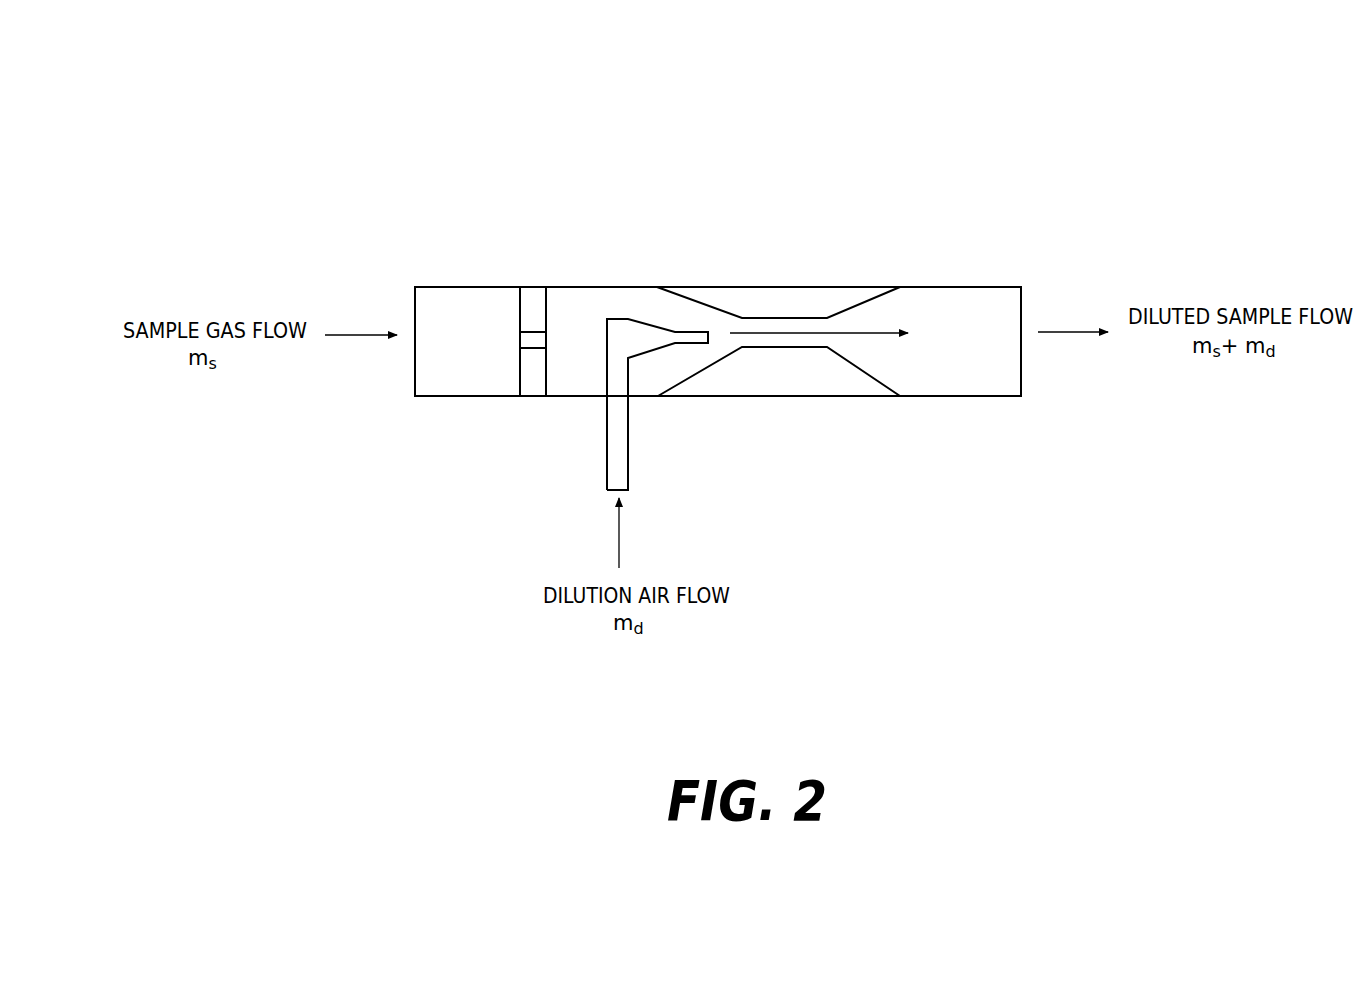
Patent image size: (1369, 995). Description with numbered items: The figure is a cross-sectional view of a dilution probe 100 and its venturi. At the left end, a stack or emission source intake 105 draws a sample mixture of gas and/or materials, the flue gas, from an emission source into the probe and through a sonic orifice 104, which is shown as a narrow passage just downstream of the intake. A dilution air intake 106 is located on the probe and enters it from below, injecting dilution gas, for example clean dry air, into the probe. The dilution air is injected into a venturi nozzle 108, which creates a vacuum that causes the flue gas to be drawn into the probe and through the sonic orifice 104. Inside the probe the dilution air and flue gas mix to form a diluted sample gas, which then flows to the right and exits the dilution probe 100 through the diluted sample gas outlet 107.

The dilution probe 100 is at (718, 295).
The sonic orifice 104 is at (546, 313).
The emission source intake 105 is at (413, 301).
The dilution air intake 106 is at (629, 455).
The diluted sample gas outlet 107 is at (1023, 300).
The venturi nozzle 108 is at (778, 302).